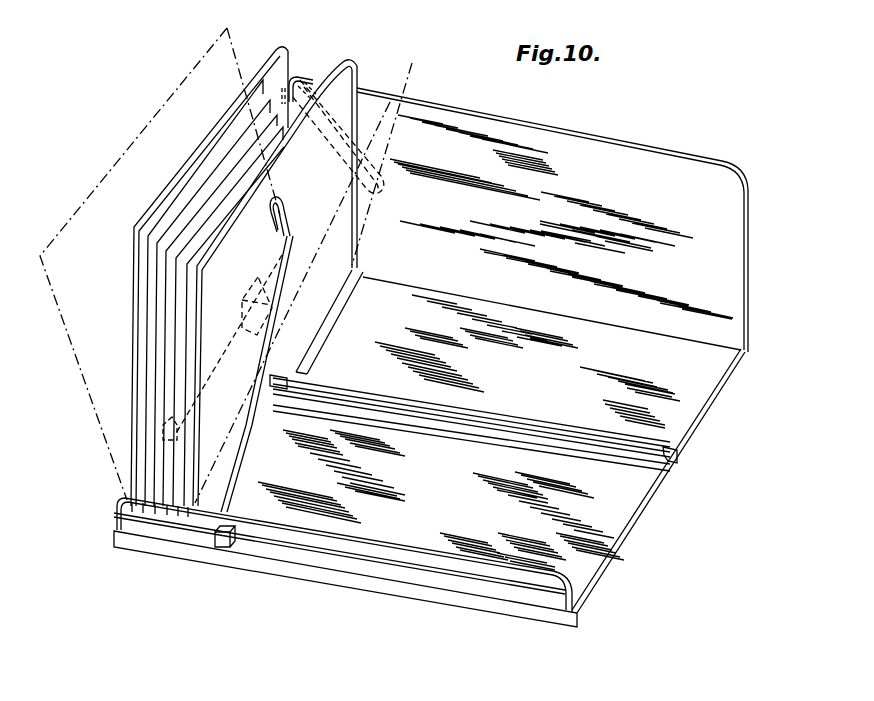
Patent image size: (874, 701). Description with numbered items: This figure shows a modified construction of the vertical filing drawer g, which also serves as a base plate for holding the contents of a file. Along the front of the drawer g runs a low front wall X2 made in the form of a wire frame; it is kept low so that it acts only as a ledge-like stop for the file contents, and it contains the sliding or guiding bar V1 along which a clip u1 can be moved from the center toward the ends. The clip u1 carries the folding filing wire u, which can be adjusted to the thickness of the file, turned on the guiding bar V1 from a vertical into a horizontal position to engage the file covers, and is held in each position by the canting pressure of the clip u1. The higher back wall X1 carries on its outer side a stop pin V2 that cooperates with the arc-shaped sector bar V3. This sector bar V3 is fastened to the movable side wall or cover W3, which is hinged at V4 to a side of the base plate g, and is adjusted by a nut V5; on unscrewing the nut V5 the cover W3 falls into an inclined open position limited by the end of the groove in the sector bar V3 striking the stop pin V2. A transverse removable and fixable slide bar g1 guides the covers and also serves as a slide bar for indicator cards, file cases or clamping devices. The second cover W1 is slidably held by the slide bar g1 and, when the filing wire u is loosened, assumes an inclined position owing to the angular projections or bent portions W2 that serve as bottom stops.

The back wall X1 is at (628, 150).
The front wall X2 is at (567, 574).
The drawer g is at (694, 410).
The transverse slide bar g1 is at (630, 458).
The guiding bar V1 is at (423, 572).
The stop pin V2 is at (339, 58).
The sector bar V3 is at (360, 86).
The hinge V4 is at (162, 420).
The nut V5 is at (308, 73).
The second cover W1 is at (258, 282).
The angular projections W2 is at (326, 320).
The cover W3 is at (266, 70).
The filing wire u is at (233, 503).
The clip u1 is at (219, 543).